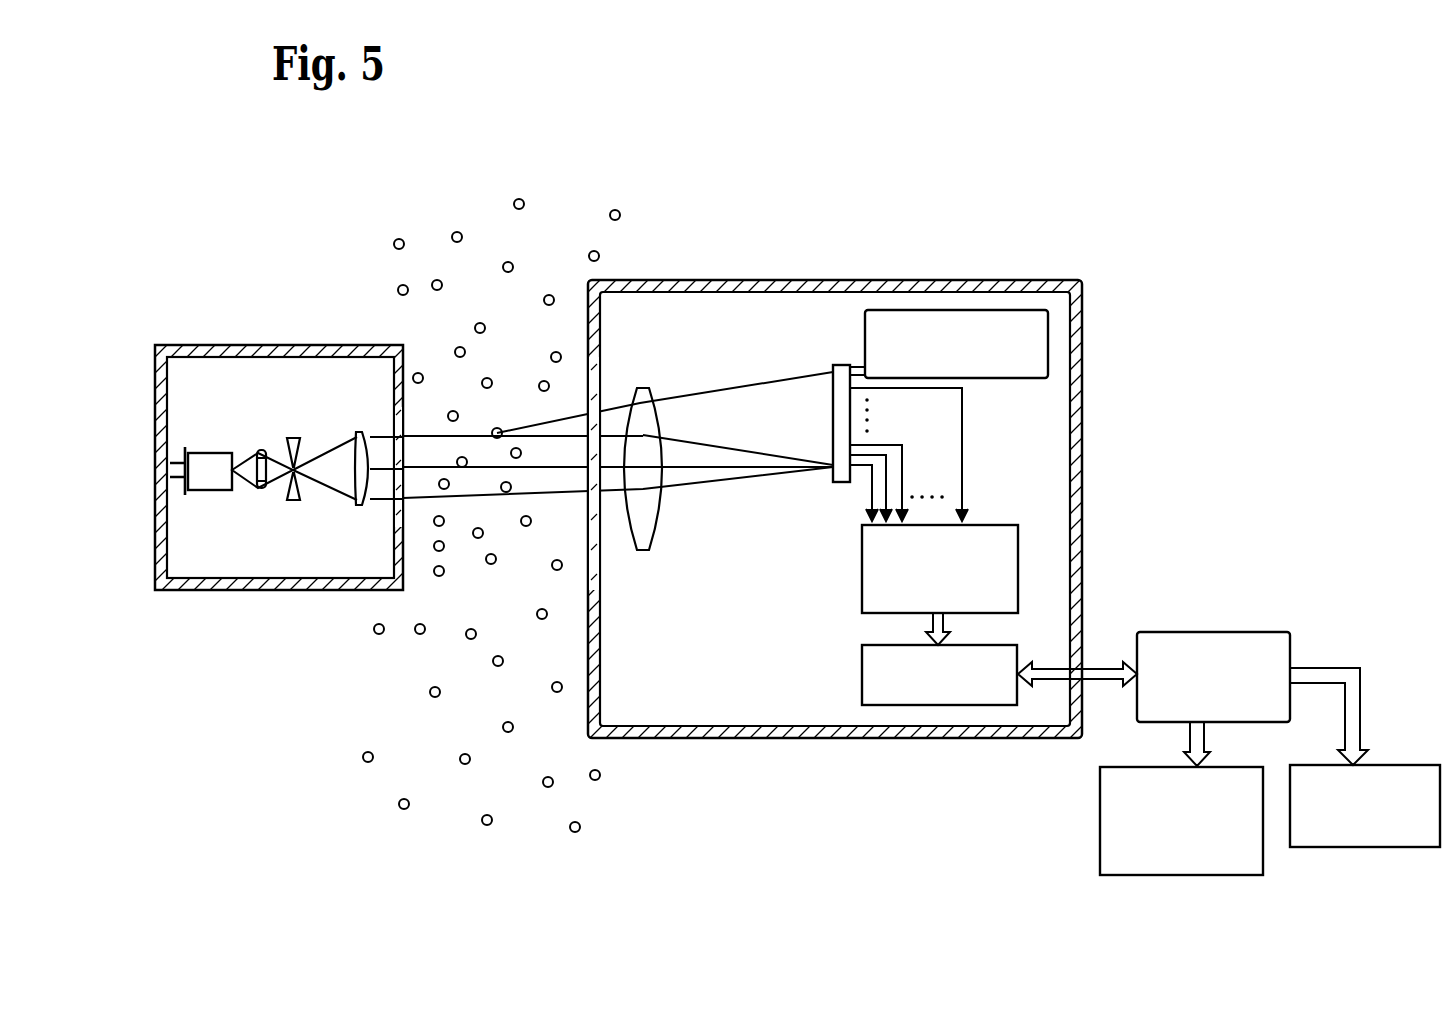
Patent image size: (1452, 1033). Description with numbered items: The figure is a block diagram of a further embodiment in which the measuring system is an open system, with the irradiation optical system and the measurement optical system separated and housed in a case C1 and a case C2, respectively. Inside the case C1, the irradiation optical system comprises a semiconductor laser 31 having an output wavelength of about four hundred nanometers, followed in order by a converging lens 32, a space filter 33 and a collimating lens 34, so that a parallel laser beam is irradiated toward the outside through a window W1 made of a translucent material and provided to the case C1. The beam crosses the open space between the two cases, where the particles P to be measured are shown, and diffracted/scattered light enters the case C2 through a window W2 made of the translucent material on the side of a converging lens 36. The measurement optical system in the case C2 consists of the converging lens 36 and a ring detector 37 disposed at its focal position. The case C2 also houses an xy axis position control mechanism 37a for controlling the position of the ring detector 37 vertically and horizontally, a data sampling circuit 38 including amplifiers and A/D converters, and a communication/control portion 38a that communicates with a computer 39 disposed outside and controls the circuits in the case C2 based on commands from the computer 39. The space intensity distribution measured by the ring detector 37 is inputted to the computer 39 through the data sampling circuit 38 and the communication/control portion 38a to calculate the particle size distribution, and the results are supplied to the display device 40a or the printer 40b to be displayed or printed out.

The semiconductor laser 31 is at (204, 490).
The converging lens 32 is at (260, 449).
The space filter 33 is at (293, 501).
The collimating lens 34 is at (357, 431).
The converging lens 36 is at (643, 551).
The ring detector 37 is at (839, 364).
The xy axis position control mechanism 37a is at (1145, 310).
The data sampling circuit 38 is at (862, 570).
The communication/control portion 38a is at (902, 749).
The computer 39 is at (1231, 632).
The display device 40a is at (1181, 821).
The printer 40b is at (1365, 806).
The case C1 is at (218, 345).
The case C2 is at (940, 279).
The window W1 is at (401, 523).
The window W2 is at (588, 587).
The particles P is at (430, 210).